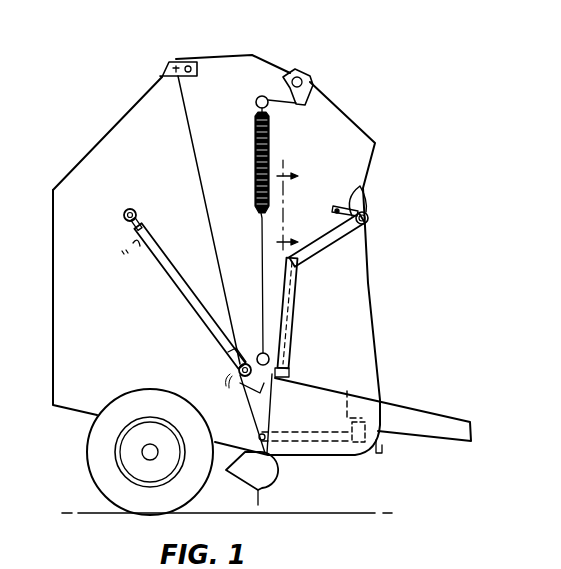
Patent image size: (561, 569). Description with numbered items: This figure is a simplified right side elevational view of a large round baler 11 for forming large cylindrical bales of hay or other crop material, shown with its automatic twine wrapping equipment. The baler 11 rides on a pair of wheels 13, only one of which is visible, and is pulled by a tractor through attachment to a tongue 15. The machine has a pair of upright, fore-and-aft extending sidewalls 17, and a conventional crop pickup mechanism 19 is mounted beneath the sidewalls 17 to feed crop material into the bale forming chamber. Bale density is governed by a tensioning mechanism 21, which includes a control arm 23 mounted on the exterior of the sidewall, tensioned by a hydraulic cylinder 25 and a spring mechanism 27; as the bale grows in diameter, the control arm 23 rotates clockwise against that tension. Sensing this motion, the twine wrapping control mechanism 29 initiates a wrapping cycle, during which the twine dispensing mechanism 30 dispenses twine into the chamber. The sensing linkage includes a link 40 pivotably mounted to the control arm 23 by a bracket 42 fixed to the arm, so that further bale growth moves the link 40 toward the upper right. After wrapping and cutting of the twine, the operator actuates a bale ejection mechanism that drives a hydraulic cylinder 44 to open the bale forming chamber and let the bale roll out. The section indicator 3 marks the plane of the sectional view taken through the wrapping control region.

The large round baler 11 is at (301, 58).
The wheels 13 is at (87, 443).
The tongue 15 is at (427, 418).
The sidewalls 17 is at (355, 328).
The crop pickup mechanism 19 is at (284, 470).
The tensioning mechanism 21 is at (283, 152).
The control arm 23 is at (364, 242).
The hydraulic cylinder 25 is at (297, 344).
The spring mechanism 27 is at (252, 131).
The twine wrapping control mechanism 29 is at (320, 418).
The twine dispensing mechanism 30 is at (332, 446).
The section line 3- 3 is at (289, 201).
The link 40 is at (333, 213).
The bracket 42 is at (362, 188).
The hydraulic cylinder 44 is at (158, 256).